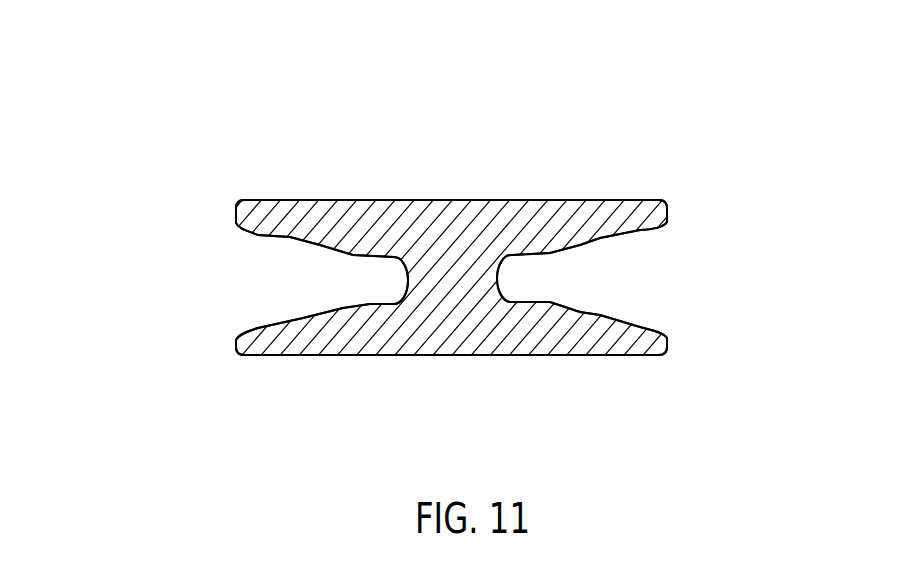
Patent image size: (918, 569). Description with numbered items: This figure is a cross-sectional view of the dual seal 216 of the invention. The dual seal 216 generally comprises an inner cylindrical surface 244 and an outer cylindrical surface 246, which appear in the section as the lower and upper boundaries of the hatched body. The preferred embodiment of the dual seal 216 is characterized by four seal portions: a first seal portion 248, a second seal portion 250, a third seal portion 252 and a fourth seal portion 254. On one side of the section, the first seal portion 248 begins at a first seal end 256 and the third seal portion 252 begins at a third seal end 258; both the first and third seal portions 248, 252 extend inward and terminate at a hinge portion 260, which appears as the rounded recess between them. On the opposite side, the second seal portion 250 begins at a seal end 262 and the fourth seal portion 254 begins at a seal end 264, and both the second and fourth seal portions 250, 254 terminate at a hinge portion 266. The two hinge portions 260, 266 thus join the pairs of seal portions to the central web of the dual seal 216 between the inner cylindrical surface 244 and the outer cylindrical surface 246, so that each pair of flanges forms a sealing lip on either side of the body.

The dual seal 216 is at (458, 145).
The inner cylindrical surface 244 is at (440, 355).
The outer cylindrical surface 246 is at (485, 200).
The first seal portion 248 is at (230, 322).
The second seal portion 250 is at (670, 320).
The third seal portion 252 is at (230, 250).
The fourth seal portion 254 is at (668, 248).
The first seal end 256 is at (237, 342).
The third seal end 258 is at (233, 221).
The hinge portion 260 is at (408, 280).
The seal end 262 is at (668, 343).
The seal end 264 is at (667, 215).
The hinge portion 266 is at (497, 278).